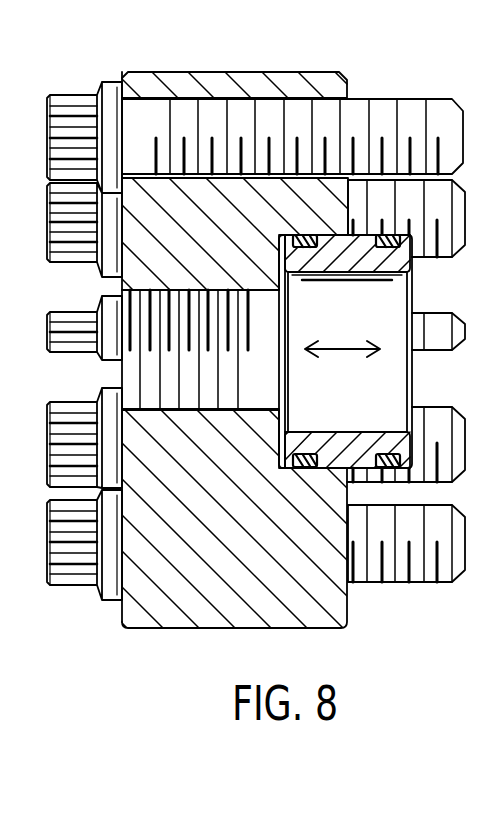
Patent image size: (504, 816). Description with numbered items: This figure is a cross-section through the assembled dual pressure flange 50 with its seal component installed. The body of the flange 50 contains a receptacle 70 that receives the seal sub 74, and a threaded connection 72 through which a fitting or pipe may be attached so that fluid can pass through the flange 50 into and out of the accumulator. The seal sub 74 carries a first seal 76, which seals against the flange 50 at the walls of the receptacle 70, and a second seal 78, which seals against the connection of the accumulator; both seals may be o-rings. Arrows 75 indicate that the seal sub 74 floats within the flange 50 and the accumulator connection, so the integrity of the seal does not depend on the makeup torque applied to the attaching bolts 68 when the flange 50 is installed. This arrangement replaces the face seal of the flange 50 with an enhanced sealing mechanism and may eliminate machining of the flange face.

The dual pressure flange 50 is at (320, 72).
The attaching bolts 68 is at (464, 545).
The receptacle 70 is at (333, 236).
The threaded connection 72 is at (150, 366).
The seal sub 74 is at (416, 292).
The arrows 75 is at (352, 348).
The first seal 76 is at (392, 464).
The second seal 78 is at (306, 464).